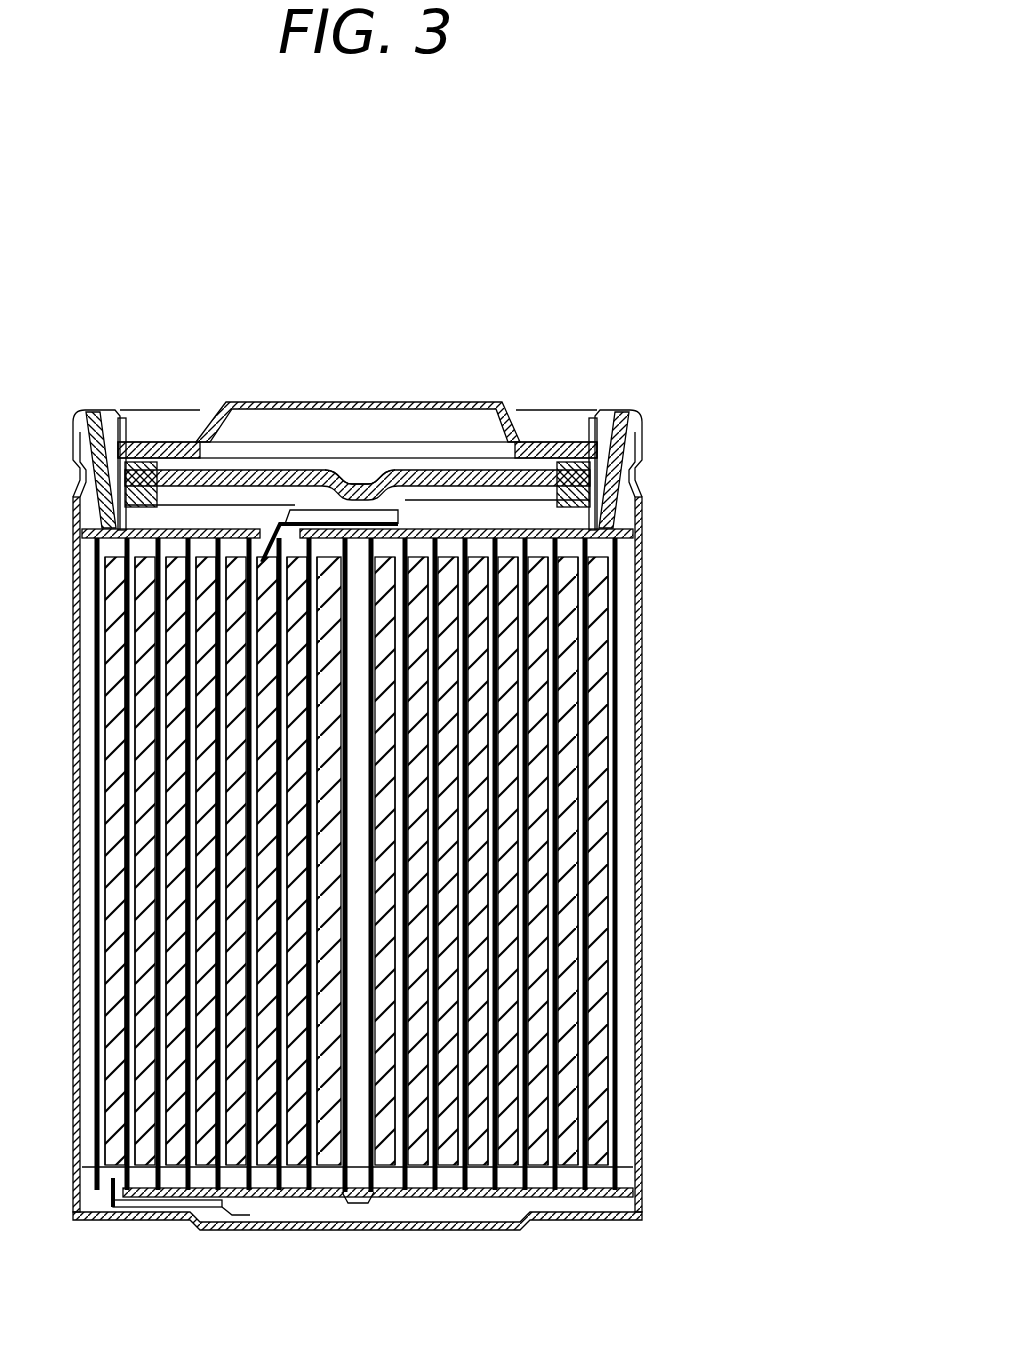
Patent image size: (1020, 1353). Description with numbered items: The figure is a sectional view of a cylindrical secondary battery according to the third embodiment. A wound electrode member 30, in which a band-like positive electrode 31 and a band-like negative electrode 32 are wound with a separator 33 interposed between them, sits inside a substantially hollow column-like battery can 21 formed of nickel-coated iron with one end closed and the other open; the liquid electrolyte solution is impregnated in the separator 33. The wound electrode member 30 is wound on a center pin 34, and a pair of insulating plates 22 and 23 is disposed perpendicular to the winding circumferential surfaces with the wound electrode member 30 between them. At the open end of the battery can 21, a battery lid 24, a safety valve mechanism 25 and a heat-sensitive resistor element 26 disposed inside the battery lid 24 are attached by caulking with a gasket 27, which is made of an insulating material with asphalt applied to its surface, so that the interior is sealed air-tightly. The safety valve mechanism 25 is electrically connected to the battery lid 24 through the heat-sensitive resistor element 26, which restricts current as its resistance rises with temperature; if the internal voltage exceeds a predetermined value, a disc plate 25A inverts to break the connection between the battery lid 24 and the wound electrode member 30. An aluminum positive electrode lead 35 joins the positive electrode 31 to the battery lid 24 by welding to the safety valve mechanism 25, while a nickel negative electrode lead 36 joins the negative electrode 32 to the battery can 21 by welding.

The battery can 21 is at (648, 606).
The insulating plate 22 is at (625, 525).
The insulating plate 23 is at (625, 1192).
The battery lid 24 is at (347, 400).
The safety valve mechanism 25 is at (468, 455).
The disc plate 25A is at (437, 470).
The heat-sensitive resistor element 26 is at (612, 452).
The gasket 27 is at (612, 485).
The wound electrode member 30 is at (407, 864).
The positive electrode 31 is at (575, 790).
The negative electrode 32 is at (610, 828).
The separator 33 is at (590, 870).
The center pin 34 is at (358, 940).
The positive electrode lead 35 is at (305, 470).
The negative electrode lead 36 is at (232, 1222).